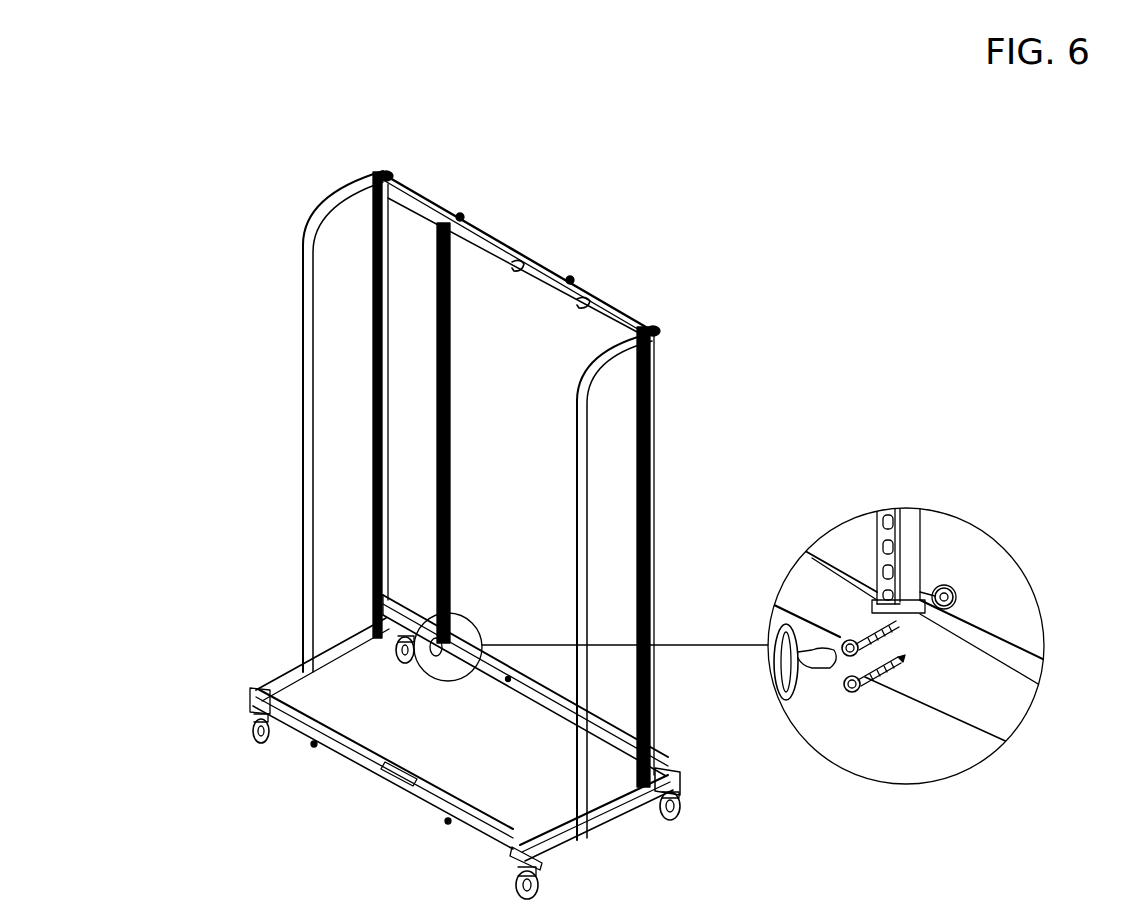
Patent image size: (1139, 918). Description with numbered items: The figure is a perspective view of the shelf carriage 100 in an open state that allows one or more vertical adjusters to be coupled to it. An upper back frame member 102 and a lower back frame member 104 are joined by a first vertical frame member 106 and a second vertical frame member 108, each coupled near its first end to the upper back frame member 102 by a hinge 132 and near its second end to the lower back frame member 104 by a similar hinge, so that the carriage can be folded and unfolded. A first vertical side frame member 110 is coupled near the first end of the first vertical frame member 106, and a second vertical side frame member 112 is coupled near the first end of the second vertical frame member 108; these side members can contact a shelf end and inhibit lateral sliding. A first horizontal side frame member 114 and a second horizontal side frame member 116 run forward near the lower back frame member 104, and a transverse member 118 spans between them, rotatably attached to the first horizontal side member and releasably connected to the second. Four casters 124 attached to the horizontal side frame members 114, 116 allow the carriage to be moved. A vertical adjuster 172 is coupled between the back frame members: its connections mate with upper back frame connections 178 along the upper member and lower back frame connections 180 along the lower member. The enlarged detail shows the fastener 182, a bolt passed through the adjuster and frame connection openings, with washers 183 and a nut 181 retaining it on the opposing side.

The shelf carriage 100 is at (906, 247).
The upper back frame member 102 is at (618, 307).
The lower back frame member 104 is at (540, 710).
The first vertical frame member 106 is at (372, 317).
The second vertical frame member 108 is at (655, 402).
The first vertical side frame member 110 is at (303, 518).
The second vertical side frame member 112 is at (575, 782).
The first horizontal side frame member 114 is at (331, 677).
The second horizontal side frame member 116 is at (615, 812).
The transverse member 118 is at (361, 750).
The casters 124 is at (250, 728).
The hinge 132 is at (401, 167).
The vertical adjuster 172 is at (485, 487).
The upper back frame connection 178 is at (531, 262).
The lower back frame connection 180 is at (516, 671).
The nut 181 is at (957, 600).
The fastener 182 is at (845, 644).
The washers 183 is at (847, 640).